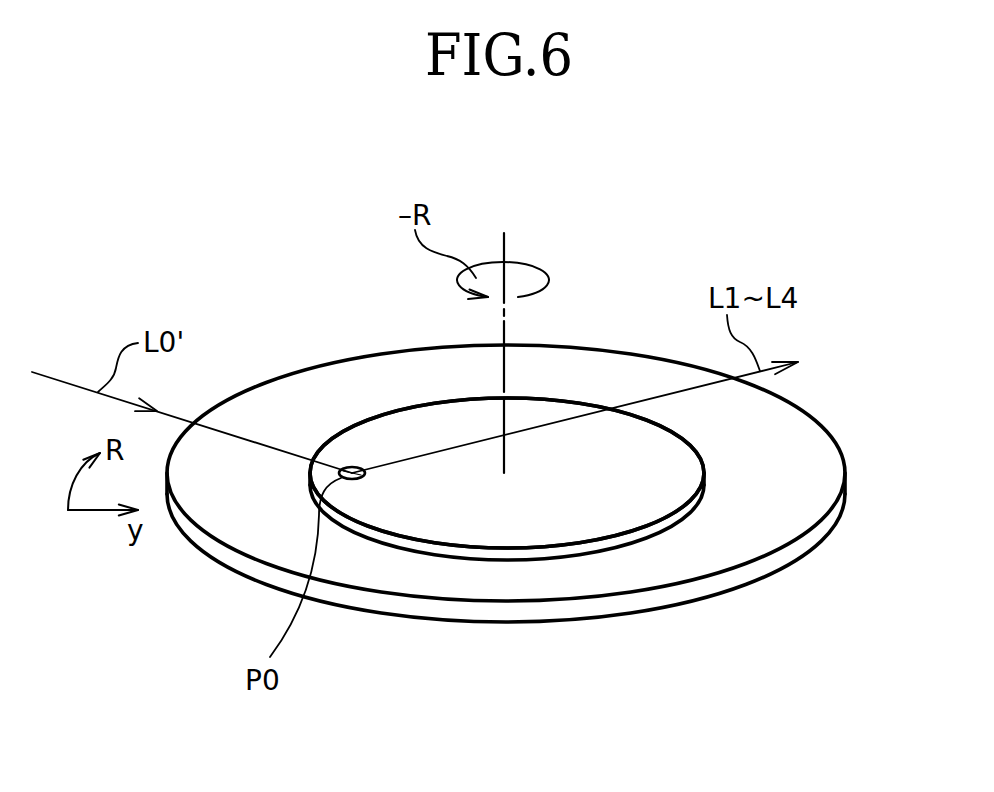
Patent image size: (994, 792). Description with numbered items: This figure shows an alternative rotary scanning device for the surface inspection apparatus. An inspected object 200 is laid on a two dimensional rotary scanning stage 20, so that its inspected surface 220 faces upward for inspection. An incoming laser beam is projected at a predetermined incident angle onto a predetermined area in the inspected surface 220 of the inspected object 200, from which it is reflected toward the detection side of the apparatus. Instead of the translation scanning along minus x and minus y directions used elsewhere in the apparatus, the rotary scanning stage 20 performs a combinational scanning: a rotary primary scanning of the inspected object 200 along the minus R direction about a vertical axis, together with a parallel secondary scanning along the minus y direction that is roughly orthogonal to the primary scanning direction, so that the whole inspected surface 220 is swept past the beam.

The rotary scanning stage 20 is at (750, 570).
The inspected object 200 is at (706, 484).
The inspected surface 220 is at (588, 530).